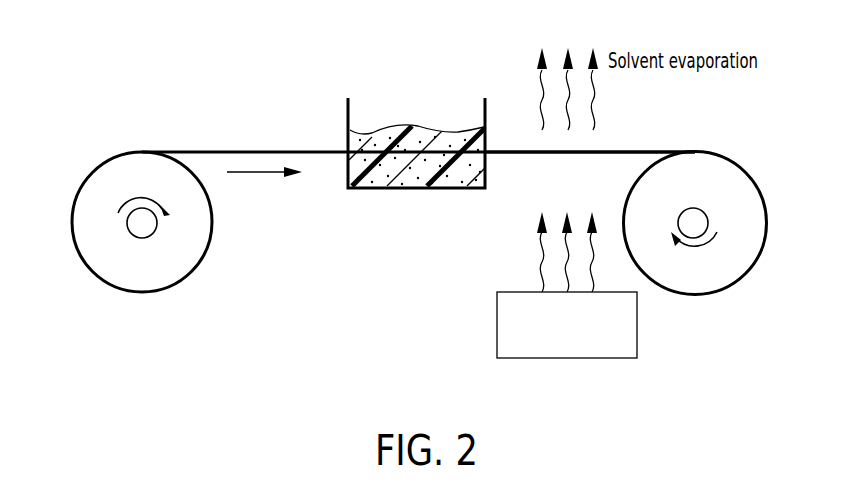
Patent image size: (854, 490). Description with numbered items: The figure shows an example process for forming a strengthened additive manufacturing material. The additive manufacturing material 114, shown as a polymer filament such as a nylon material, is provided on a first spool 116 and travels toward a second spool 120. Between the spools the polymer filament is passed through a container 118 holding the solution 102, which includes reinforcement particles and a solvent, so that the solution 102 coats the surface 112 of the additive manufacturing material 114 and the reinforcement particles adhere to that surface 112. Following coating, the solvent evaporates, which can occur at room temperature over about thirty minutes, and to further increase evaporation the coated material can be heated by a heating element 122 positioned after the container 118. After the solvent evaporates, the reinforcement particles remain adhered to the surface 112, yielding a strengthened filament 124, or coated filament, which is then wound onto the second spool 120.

The solution 102 is at (431, 92).
The surface 112 is at (256, 138).
The additive manufacturing material 114 is at (193, 150).
The first spool 116 is at (104, 186).
The container 118 is at (350, 97).
The second spool 120 is at (746, 199).
The heating element 122 is at (497, 325).
The strengthened filament 124 is at (655, 150).